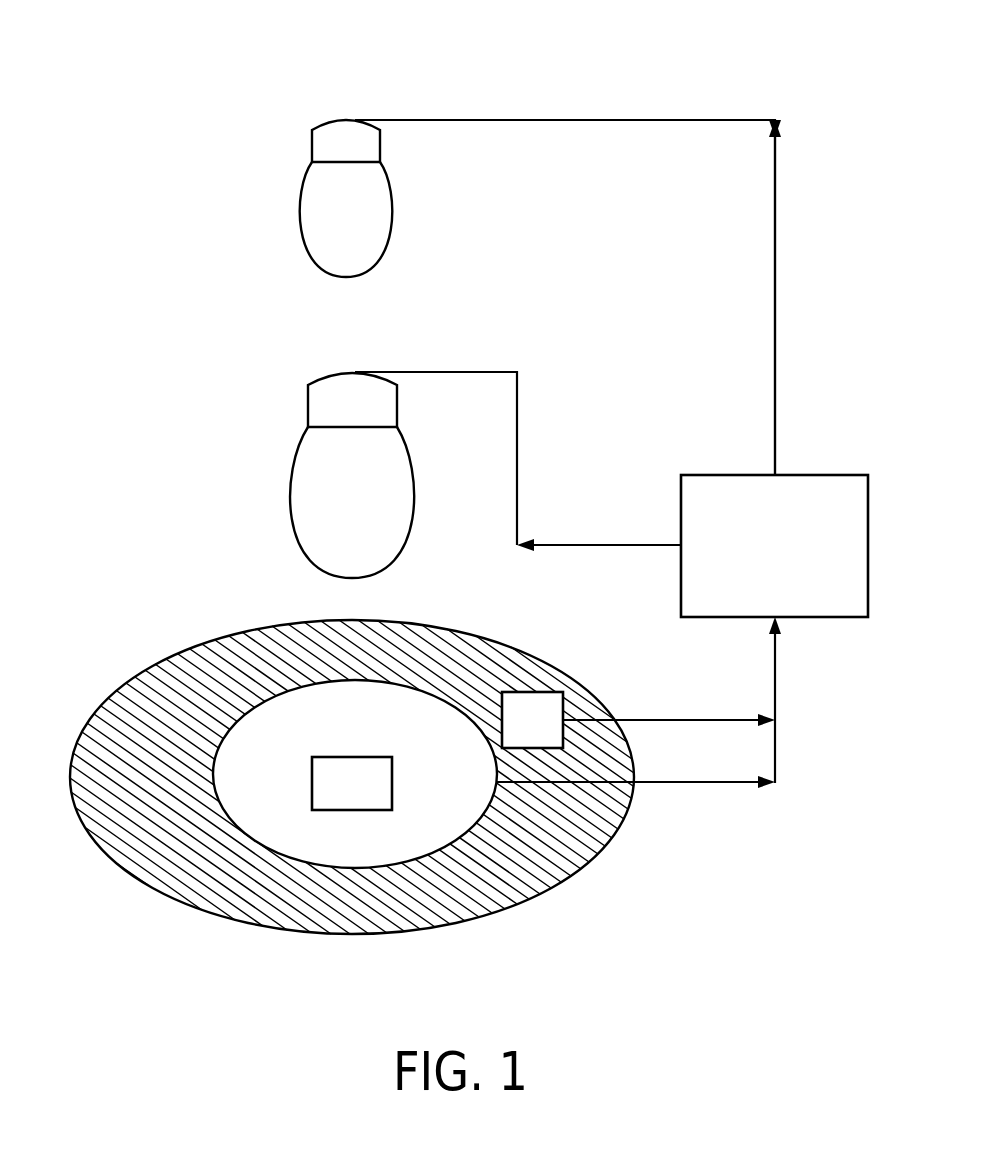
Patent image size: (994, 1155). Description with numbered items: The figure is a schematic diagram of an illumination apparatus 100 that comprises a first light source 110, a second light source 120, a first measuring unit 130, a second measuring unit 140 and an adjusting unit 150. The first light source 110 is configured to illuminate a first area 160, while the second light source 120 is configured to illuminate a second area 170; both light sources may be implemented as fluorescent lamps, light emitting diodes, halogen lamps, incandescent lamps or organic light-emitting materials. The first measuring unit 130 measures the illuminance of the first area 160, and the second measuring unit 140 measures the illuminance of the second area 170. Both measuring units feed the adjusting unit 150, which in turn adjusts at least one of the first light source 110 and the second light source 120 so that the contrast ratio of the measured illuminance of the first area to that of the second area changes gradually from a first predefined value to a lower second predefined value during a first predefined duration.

The illumination apparatus 100 is at (148, 155).
The first light source 110 is at (318, 493).
The second light source 120 is at (313, 207).
The first measuring unit 130 is at (328, 796).
The second measuring unit 140 is at (508, 733).
The adjusting unit 150 is at (751, 559).
The first area 160 is at (347, 853).
The second area 170 is at (465, 873).